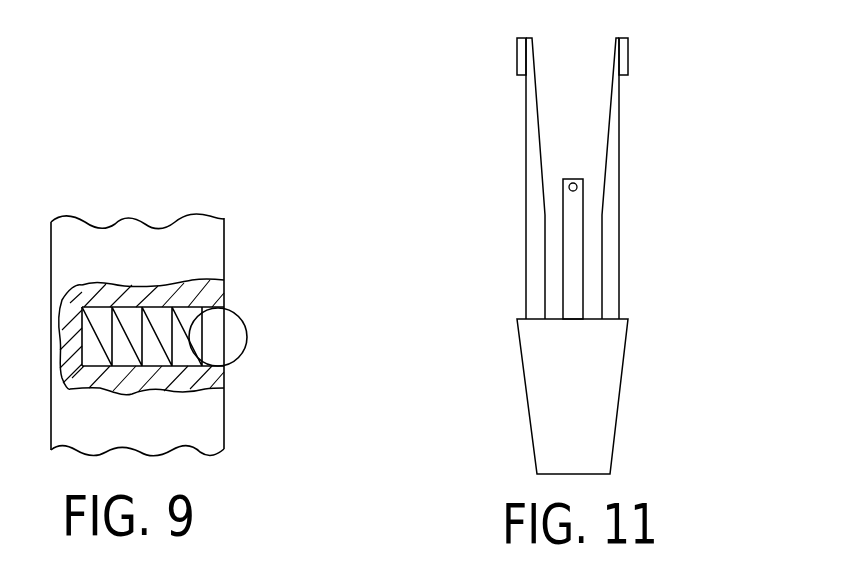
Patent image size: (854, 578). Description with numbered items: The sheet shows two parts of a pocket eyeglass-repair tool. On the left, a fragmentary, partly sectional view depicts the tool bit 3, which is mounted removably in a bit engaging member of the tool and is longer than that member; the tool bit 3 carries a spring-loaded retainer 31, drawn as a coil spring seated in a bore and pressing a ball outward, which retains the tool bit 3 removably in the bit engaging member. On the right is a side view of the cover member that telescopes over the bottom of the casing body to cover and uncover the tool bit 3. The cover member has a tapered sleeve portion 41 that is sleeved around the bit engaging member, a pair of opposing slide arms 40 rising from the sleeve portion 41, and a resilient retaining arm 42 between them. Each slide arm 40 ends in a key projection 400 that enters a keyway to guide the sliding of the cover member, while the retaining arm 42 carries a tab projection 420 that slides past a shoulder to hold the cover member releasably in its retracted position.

In FIG. 9, the tool bit 3 is at (210, 240).
In FIG. 9, the spring-loaded retainer 31 is at (232, 325).
In FIG. 11, the slide arm 40 is at (535, 220).
In FIG. 11, the key projection 400 is at (517, 58).
In FIG. 11, the sleeve portion 41 is at (608, 333).
In FIG. 11, the resilient retaining arm 42 is at (575, 253).
In FIG. 11, the tab projection 420 is at (573, 183).